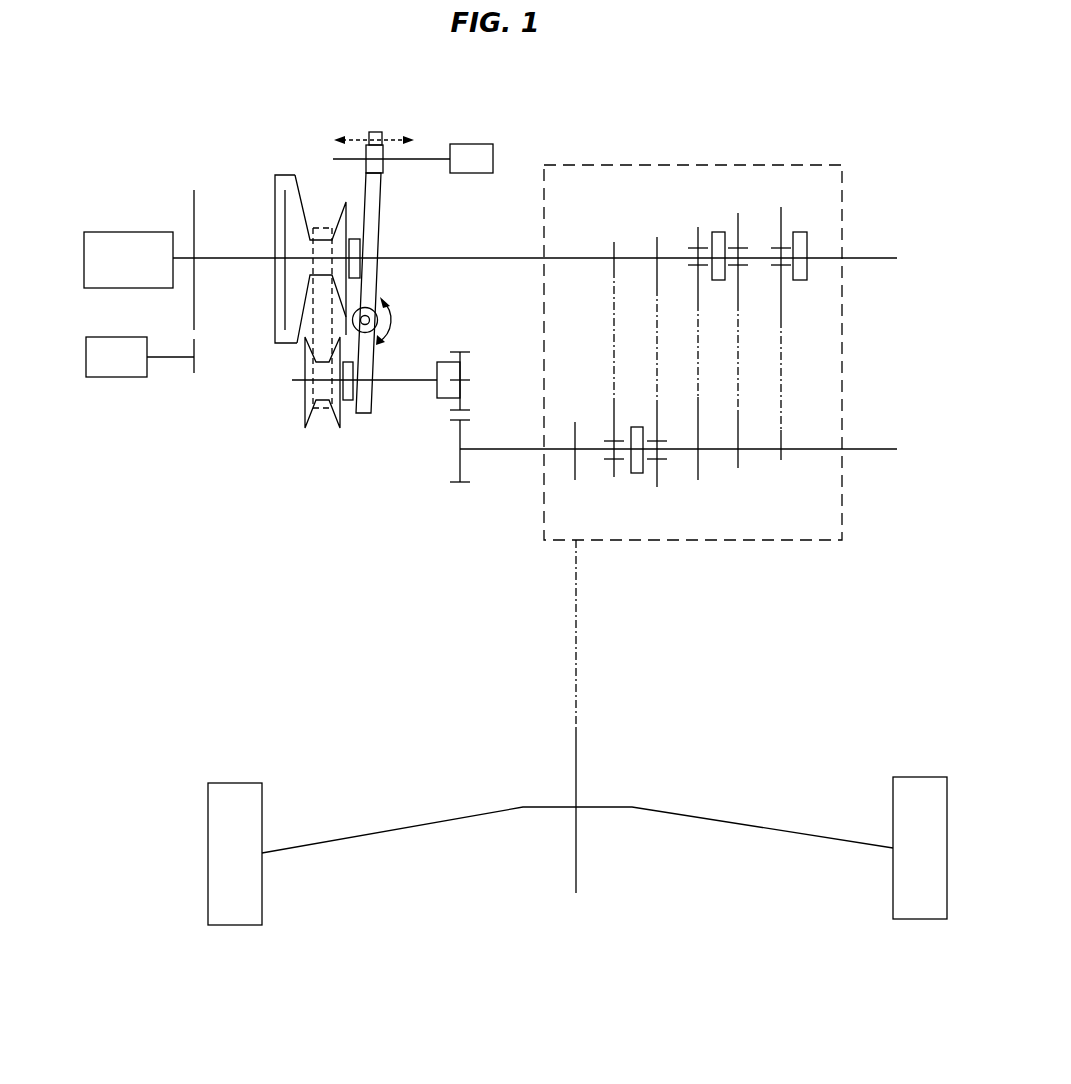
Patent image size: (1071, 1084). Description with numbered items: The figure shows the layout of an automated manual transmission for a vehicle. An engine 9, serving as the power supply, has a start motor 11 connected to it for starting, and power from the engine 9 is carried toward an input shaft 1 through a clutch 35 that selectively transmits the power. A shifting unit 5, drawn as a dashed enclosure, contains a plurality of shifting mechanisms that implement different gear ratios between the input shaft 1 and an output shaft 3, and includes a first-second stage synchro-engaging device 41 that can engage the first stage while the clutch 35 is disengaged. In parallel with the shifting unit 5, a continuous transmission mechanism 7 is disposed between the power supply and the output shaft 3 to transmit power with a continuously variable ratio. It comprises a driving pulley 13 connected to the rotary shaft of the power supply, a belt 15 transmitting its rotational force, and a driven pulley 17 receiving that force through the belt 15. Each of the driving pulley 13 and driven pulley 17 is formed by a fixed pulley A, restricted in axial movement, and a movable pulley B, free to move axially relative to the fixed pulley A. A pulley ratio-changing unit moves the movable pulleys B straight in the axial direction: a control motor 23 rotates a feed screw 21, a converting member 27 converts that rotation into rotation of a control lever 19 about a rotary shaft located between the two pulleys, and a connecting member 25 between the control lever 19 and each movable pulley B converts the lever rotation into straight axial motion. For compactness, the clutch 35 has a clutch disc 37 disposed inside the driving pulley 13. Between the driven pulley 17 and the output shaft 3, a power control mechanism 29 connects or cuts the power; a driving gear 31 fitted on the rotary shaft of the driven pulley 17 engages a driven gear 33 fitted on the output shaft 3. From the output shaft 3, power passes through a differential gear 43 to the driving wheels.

The input shaft 1 is at (873, 255).
The output shaft 3 is at (880, 447).
The shifting unit 5 is at (693, 334).
The continuous transmission mechanism 7 is at (272, 375).
The engine 9 is at (122, 232).
The start motor 11 is at (118, 377).
The driving pulley 13 is at (266, 210).
The belt 15 is at (313, 322).
The driven pulley 17 is at (256, 506).
The control lever 19 is at (376, 195).
The feed screw 21 is at (420, 158).
The control motor 23 is at (478, 144).
The connecting member 25 is at (362, 250).
The converting member 27 is at (372, 132).
The power control mechanism 29 is at (436, 402).
The driving gear 31 is at (465, 350).
The driven gear 33 is at (459, 485).
The clutch 35 is at (274, 200).
The clutch disc 37 is at (284, 219).
The first-second stage synchro-engaging device 41 is at (637, 482).
The differential gear 43 is at (604, 782).
The fixed pulley A is at (283, 206).
The movable pulley B is at (346, 204).